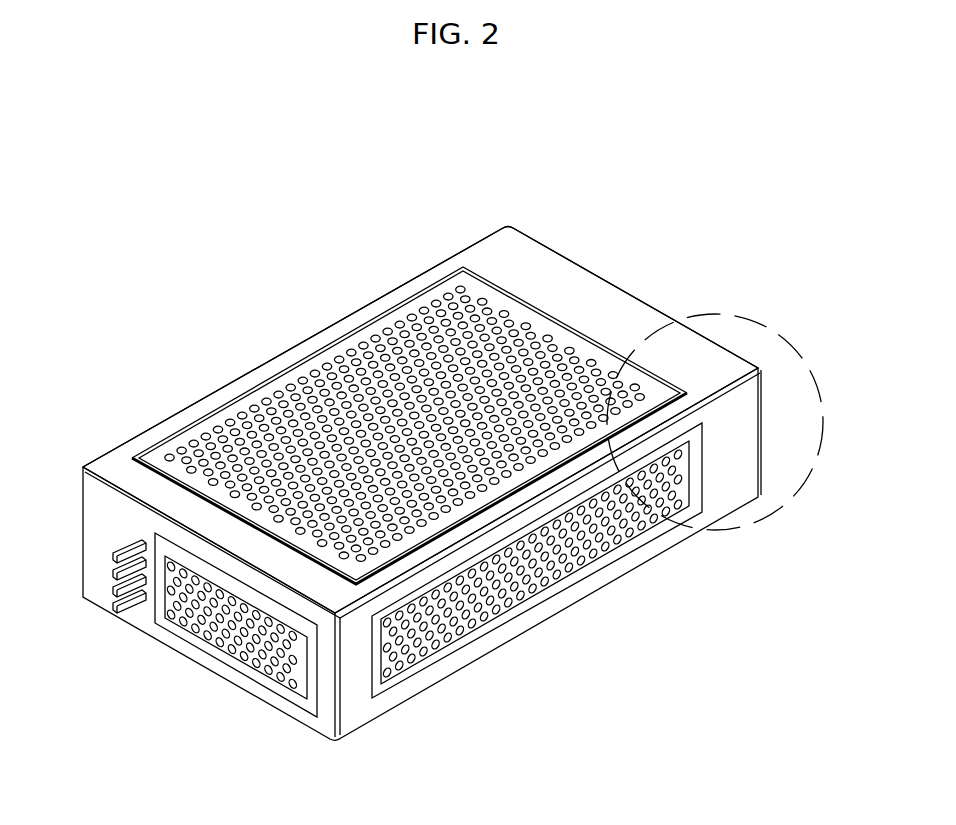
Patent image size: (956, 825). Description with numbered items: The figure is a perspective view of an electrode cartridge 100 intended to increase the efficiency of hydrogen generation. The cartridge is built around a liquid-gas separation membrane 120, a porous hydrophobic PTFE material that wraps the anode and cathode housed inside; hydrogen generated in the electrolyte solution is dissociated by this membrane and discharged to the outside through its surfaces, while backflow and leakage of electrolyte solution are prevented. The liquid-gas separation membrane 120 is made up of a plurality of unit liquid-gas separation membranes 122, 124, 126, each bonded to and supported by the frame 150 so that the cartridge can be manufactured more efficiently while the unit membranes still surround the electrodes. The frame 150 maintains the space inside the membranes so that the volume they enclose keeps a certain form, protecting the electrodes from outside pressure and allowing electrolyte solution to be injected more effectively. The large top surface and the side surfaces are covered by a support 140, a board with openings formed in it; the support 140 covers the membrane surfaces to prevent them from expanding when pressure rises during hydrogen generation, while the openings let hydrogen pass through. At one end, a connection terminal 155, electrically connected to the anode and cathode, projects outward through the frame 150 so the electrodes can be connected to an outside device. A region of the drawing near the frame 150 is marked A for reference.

The electrode cartridge 100 is at (762, 147).
The liquid-gas separation membrane 120 is at (588, 677).
The unit liquid-gas separation membrane 122 is at (300, 677).
The unit liquid-gas separation membrane 124 is at (378, 545).
The unit liquid-gas separation membrane 126 is at (487, 600).
The support 140 is at (385, 295).
The frame 150 is at (497, 250).
The connection terminal 155 is at (116, 607).
The region A is at (800, 350).